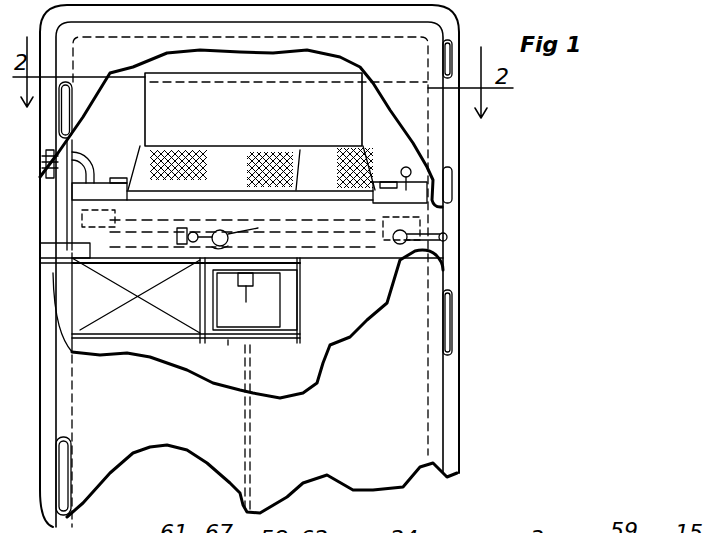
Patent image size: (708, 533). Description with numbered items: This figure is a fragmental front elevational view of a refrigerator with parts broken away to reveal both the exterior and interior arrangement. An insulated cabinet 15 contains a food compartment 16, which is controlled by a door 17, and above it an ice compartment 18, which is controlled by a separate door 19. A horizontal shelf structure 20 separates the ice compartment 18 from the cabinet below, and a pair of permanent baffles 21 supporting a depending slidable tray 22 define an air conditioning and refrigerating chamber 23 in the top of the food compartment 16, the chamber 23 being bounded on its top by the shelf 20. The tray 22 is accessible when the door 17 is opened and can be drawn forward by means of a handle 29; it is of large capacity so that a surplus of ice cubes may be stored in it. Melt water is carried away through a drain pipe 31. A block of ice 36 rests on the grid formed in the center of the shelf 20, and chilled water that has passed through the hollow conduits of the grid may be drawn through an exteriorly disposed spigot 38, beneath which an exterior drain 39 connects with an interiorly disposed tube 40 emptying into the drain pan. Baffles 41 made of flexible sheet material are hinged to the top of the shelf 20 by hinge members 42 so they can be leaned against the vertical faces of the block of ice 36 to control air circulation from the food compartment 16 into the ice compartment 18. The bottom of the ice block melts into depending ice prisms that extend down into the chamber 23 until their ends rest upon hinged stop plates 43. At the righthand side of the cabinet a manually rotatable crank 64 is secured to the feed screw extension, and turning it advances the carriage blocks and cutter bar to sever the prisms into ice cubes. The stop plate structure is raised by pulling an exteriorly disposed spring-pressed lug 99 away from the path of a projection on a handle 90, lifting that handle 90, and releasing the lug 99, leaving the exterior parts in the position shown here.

The cabinet 15 is at (458, 363).
The food compartment 16 is at (290, 375).
The door 17 is at (420, 417).
The ice compartment 18 is at (403, 155).
The separate door 19 is at (407, 117).
The horizontal shelf structure 20 is at (400, 195).
The permanent baffles 21 is at (200, 260).
The slidable tray 22 is at (300, 308).
The air conditioning and refrigerating chamber 23 is at (293, 270).
The handle 29 is at (293, 310).
The drain pipe 31 is at (290, 205).
The block of ice 36 is at (160, 113).
The spigot 38 is at (48, 170).
The exterior drain 39 is at (228, 340).
The tube 40 is at (153, 305).
The baffles 41 is at (372, 165).
The hinge members 42 is at (117, 178).
The hinged stop plates 43 is at (305, 163).
The manually rotatable crank 64 is at (440, 233).
The handle 90 is at (250, 226).
The spring-pressed lug 99 is at (193, 245).